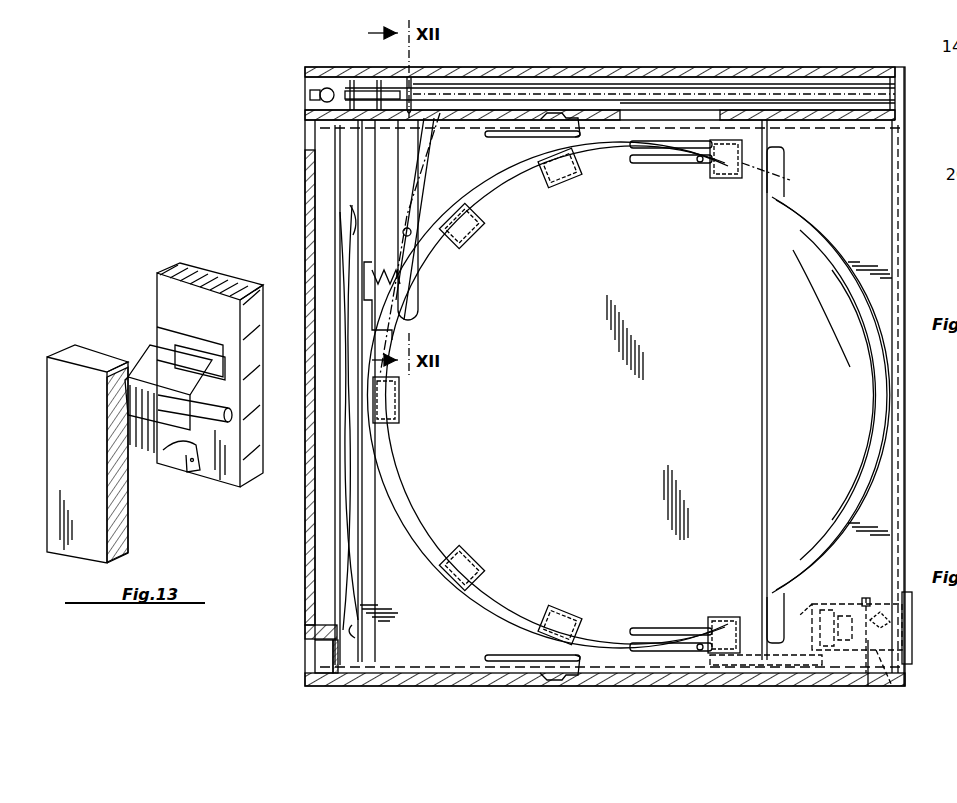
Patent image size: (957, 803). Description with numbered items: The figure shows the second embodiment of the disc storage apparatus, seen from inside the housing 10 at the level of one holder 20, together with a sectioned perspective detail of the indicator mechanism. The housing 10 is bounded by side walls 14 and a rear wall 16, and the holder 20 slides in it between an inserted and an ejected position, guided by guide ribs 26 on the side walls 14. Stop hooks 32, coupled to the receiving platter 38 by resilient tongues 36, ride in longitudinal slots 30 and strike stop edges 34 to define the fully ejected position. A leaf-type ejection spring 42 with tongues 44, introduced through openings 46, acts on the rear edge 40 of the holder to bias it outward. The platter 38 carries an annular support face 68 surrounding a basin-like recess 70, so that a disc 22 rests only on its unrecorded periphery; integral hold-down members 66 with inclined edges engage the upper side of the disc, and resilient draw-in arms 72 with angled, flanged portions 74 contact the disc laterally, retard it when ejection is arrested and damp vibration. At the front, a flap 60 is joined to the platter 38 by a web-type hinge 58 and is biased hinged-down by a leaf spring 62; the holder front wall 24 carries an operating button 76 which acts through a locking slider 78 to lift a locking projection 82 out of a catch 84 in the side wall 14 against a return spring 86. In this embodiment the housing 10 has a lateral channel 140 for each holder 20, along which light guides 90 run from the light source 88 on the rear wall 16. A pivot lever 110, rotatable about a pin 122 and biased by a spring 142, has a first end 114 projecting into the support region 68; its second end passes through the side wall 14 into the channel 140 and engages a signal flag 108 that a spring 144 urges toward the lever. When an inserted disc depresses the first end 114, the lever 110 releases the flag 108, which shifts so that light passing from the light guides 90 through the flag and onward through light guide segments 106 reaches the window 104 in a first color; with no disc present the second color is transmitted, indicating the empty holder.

In FIG. 11, the housing 10 is at (356, 690).
In FIG. 11, the side walls 14 is at (828, 110).
In FIG. 13, the side walls 14 is at (175, 268).
In FIG. 11, the rear wall 16 is at (312, 580).
In FIG. 11, the recording media carrier holders 20 is at (905, 393).
In FIG. 11, the disc 22 is at (428, 285).
In FIG. 11, the front wall 24 is at (898, 497).
In FIG. 11, the guide ribs 26 is at (785, 128).
In FIG. 11, the longitudinal slots 30 is at (645, 112).
In FIG. 13, the longitudinal slots 30 is at (160, 350).
In FIG. 11, the stop hooks 32 is at (552, 125).
In FIG. 11, the stop edges 34 is at (728, 112).
In FIG. 11, the resilient tongues 36 is at (505, 138).
In FIG. 11, the receiving platter 38 is at (436, 631).
In FIG. 11, the rear edge 40 is at (357, 632).
In FIG. 11, the ejection springs 42 is at (352, 490).
In FIG. 11, the tongues 44 is at (358, 575).
In FIG. 11, the openings 46 is at (320, 163).
In FIG. 11, the web-type hinge 58 is at (770, 410).
In FIG. 11, the flap 60 is at (858, 440).
In FIG. 11, the leaf spring 62 is at (795, 662).
In FIG. 11, the hold-down members 66 is at (568, 180).
In FIG. 11, the support face 68 is at (412, 505).
In FIG. 11, the basin-like recess 70 is at (638, 417).
In FIG. 11, the draw-in arms 72 is at (650, 148).
In FIG. 11, the angled portion 74 is at (697, 162).
In FIG. 11, the operating button 76 is at (912, 632).
In FIG. 11, the locking slider members 78 is at (890, 685).
In FIG. 11, the locking projections 82 is at (868, 686).
In FIG. 11, the catches 84 is at (862, 672).
In FIG. 11, the return spring 86 is at (840, 608).
In FIG. 11, the light source 88 is at (326, 88).
In FIG. 11, the light guides 90 is at (362, 90).
In FIG. 13, the light guides 90 is at (225, 400).
In FIG. 11, the windows 104 is at (908, 80).
In FIG. 11, the light guide segments 106 is at (702, 95).
In FIG. 13, the light guide segments 106 is at (135, 375).
In FIG. 11, the signal flag 108 is at (428, 70).
In FIG. 13, the signal flag 108 is at (108, 418).
In FIG. 11, the pivot lever 110 is at (415, 188).
In FIG. 13, the pivot lever 110 is at (188, 345).
In FIG. 11, the first end 114 is at (414, 318).
In FIG. 11, the pin 122 is at (412, 250).
In FIG. 11, the lateral channels 140 is at (590, 90).
In FIG. 13, the lateral channels 140 is at (102, 348).
In FIG. 11, the springs 142 is at (372, 275).
In FIG. 13, the spring 144 is at (188, 470).